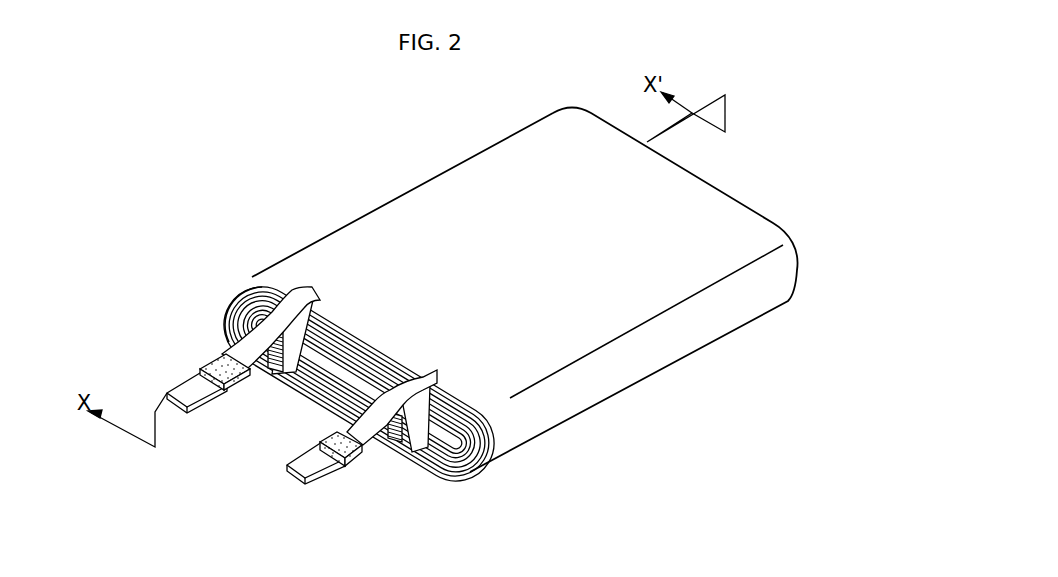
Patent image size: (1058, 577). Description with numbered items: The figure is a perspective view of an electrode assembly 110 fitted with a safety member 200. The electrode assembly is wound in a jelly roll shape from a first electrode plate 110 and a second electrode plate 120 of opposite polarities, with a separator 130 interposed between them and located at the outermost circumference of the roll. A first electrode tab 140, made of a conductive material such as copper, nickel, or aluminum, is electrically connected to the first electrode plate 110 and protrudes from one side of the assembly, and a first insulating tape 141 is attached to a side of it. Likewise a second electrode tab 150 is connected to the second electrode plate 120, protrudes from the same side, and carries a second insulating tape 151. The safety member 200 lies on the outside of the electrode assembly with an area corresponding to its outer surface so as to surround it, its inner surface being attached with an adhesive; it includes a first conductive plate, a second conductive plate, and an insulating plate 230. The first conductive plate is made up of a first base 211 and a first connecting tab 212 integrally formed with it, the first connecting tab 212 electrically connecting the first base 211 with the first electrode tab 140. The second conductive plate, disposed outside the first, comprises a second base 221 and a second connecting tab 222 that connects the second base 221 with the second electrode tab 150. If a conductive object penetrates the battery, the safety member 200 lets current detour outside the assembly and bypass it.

The safety member 200 is at (392, 194).
The first electrode plate 110 is at (331, 395).
The second electrode plate 120 is at (322, 348).
The separator 130 is at (363, 362).
The first electrode tab 140 is at (310, 468).
The first insulating tape 141 is at (357, 460).
The second electrode tab 150 is at (178, 390).
The second insulating tape 151 is at (205, 363).
The first base 211 is at (482, 403).
The first connecting tab 212 is at (370, 438).
The second base 221 is at (252, 277).
The second connecting tab 222 is at (222, 355).
The insulating plate 230 is at (240, 303).